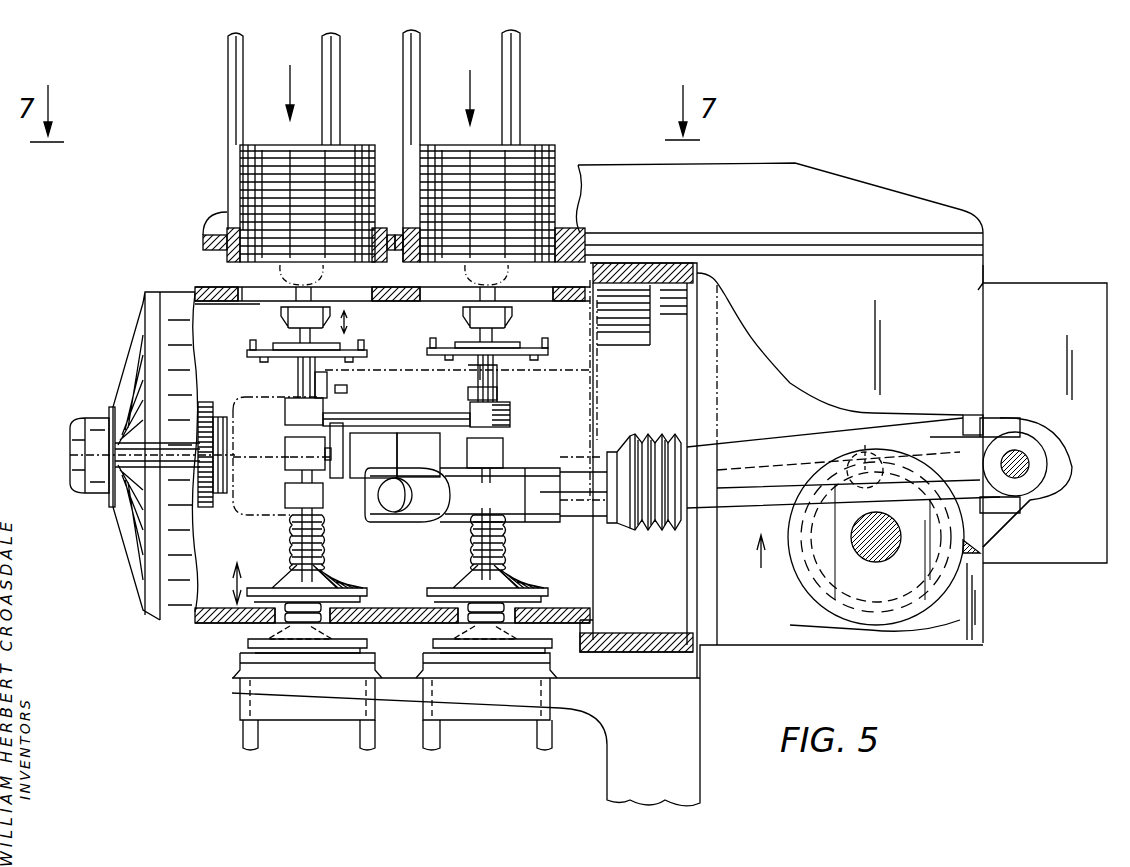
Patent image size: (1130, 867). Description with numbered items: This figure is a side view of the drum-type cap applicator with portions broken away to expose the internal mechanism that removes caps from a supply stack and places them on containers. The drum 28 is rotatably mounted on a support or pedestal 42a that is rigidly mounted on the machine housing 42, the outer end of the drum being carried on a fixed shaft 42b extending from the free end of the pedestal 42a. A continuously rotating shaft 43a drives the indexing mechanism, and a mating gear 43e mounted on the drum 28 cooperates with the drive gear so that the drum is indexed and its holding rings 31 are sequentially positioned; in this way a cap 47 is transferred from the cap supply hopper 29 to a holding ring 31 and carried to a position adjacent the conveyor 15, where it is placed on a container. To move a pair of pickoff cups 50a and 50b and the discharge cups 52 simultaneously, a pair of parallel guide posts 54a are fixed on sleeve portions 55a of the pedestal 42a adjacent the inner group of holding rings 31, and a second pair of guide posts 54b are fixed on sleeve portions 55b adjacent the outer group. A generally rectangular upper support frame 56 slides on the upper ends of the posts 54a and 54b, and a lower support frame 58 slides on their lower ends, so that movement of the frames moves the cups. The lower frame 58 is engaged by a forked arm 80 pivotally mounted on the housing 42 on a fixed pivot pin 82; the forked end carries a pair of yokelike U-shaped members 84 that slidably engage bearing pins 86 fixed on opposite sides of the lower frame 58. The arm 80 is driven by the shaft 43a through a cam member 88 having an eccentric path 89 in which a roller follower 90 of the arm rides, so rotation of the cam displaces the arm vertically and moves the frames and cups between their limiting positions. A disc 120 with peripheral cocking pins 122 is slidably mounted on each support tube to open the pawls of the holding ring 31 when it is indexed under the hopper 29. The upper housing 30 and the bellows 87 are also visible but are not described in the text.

The conveyor 15 is at (615, 770).
The drum 28 is at (213, 623).
The cap supply hopper 29 is at (255, 125).
The upper housing 30 is at (715, 170).
The holding ring 31 is at (240, 290).
The machine housing 42 is at (965, 272).
The support or pedestal 42a is at (556, 374).
The fixed shaft 42b is at (200, 515).
The continuously rotating shaft 43a is at (877, 560).
The mating gear 43e is at (212, 402).
The cap 47 is at (267, 177).
The pickoff cup 50a is at (520, 287).
The pickoff cup 50b is at (270, 284).
The discharge cup 52 is at (250, 640).
The parallel guide posts 54a is at (495, 375).
The parallel guide posts 54b is at (300, 372).
The sleeve portions 55a is at (290, 466).
The sleeve portions 55b is at (503, 450).
The upper support frame 56 is at (386, 412).
The lower support frame 58 is at (292, 524).
The forked arm 80 is at (482, 478).
The fixed pivot pin 82 is at (1018, 462).
The yokelike U-shaped members 84 is at (415, 478).
The bearing pins 86 is at (392, 480).
The bellows 87 is at (660, 418).
The cam member 88 is at (832, 612).
The eccentric path 89 is at (895, 600).
The follower 90 is at (866, 456).
The disc 120 is at (268, 348).
The cocking pins 122 is at (410, 340).